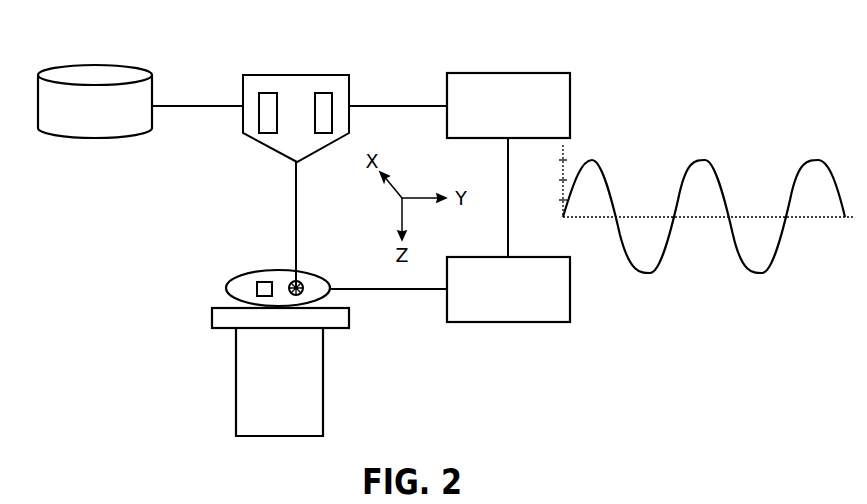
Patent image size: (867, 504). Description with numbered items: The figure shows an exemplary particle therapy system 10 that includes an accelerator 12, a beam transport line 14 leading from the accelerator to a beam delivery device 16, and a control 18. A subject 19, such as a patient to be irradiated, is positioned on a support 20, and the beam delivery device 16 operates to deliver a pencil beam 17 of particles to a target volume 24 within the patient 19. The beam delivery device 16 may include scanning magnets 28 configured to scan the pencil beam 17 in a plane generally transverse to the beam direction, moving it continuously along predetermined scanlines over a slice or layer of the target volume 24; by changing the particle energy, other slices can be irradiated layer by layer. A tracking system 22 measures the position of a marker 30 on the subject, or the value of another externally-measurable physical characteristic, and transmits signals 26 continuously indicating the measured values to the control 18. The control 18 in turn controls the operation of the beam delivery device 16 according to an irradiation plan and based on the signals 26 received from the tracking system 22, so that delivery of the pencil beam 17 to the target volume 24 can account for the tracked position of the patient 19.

The particle therapy system 10 is at (163, 231).
The accelerator 12 is at (128, 70).
The beam transport line 14 is at (183, 108).
The beam delivery device 16 is at (293, 75).
The pencil beam 17 is at (294, 193).
The control 18 is at (530, 73).
The subject 19 is at (232, 288).
The support 20 is at (212, 320).
The tracking system 22 is at (490, 322).
The target volume 24 is at (301, 284).
The signals 26 is at (610, 178).
The scanning magnets 28 is at (328, 92).
The marker 30 is at (260, 281).